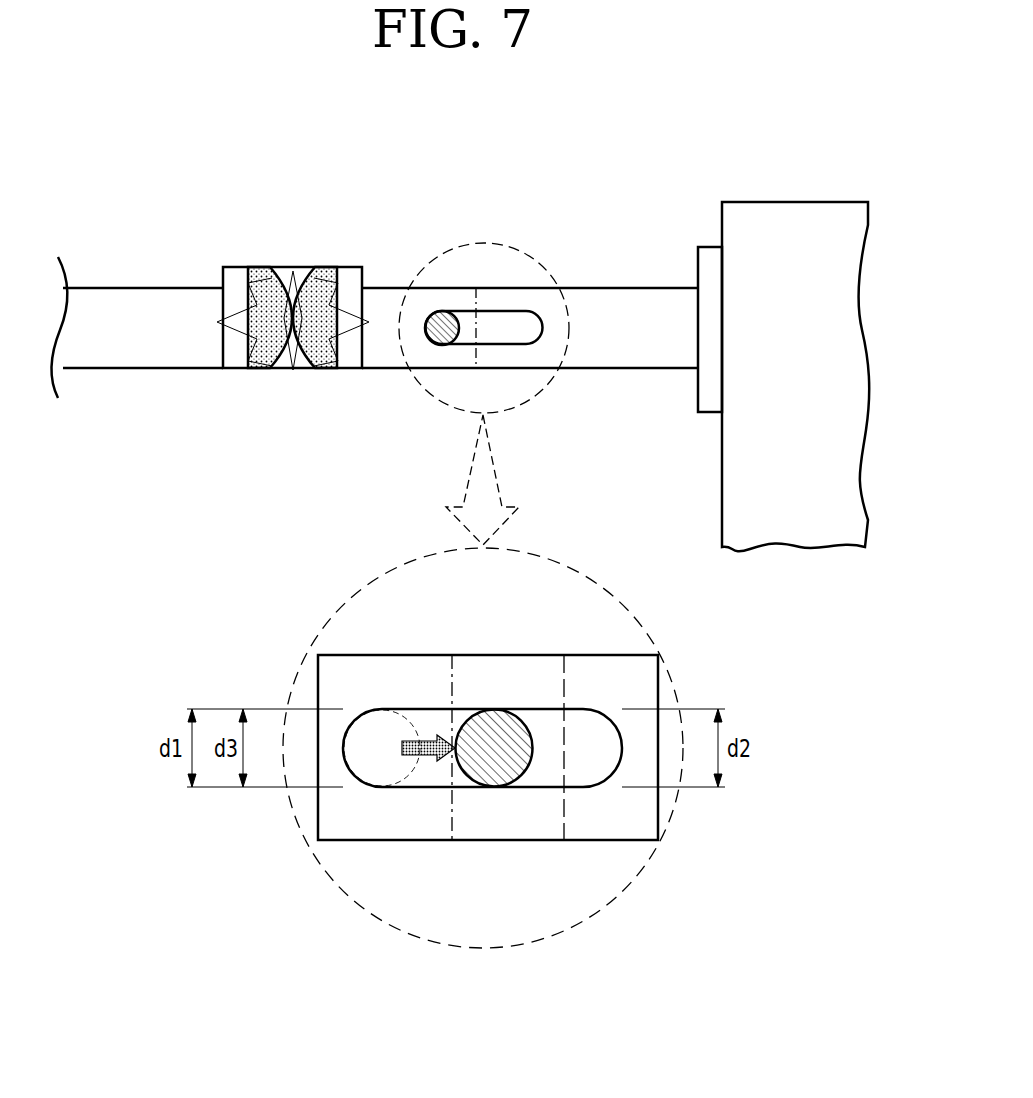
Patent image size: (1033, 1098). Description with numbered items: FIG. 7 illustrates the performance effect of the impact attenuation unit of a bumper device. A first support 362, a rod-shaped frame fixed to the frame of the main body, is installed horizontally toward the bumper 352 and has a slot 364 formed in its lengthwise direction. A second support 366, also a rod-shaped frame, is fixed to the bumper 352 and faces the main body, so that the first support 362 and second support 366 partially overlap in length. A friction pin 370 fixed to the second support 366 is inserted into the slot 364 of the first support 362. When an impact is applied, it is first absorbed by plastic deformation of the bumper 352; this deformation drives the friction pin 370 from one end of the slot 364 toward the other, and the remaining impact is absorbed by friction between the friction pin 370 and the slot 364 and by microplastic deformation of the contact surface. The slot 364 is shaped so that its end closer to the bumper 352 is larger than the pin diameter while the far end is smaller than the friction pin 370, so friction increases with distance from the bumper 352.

The bumper 352 is at (315, 263).
The first support 362 is at (625, 300).
The slot 364 is at (587, 753).
The second support 366 is at (444, 288).
The friction pin 370 is at (489, 787).